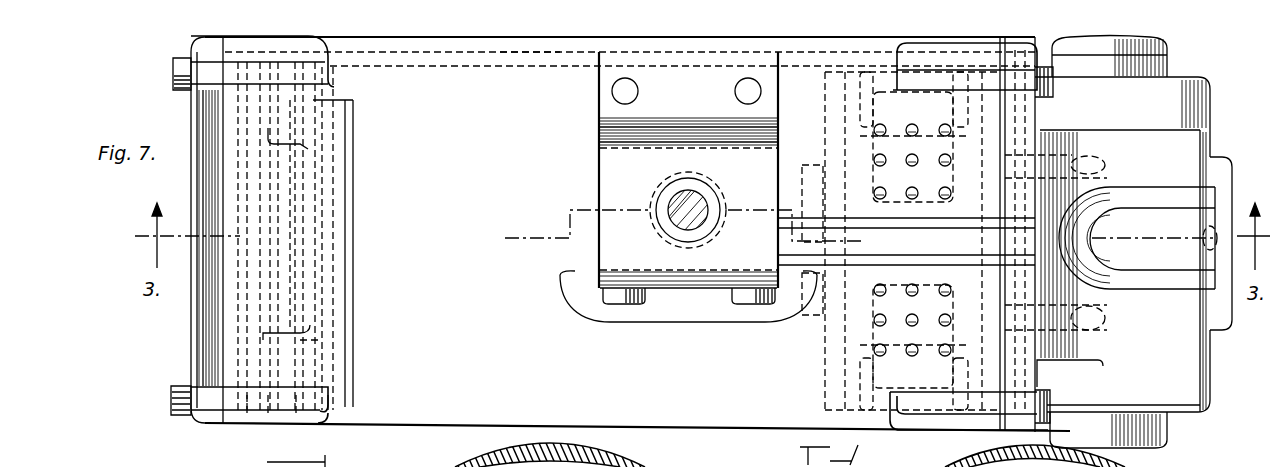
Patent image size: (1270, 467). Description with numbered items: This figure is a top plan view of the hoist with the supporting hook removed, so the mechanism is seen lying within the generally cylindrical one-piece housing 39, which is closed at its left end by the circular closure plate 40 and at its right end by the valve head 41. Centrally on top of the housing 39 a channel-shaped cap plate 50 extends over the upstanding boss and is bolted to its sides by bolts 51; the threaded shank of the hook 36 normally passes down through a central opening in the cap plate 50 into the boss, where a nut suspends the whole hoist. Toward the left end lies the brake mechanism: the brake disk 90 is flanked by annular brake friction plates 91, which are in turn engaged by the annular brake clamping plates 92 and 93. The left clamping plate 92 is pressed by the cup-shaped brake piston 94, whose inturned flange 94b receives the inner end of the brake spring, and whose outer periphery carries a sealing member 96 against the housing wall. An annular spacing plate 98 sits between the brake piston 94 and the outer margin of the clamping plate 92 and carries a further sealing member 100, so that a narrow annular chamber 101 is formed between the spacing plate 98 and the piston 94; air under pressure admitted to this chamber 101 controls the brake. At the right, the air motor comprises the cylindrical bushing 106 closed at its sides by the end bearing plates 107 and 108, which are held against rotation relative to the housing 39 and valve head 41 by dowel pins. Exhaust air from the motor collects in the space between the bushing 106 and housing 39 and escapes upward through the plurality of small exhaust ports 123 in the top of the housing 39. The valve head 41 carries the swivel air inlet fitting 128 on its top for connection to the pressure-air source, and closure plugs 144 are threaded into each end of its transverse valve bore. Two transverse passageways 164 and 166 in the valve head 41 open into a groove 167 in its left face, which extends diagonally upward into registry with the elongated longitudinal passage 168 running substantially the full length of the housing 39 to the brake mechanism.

The hook 36 is at (708, 194).
The housing 39 is at (735, 422).
The closure plate 40 is at (200, 330).
The valve head 41 is at (1213, 92).
The cap plate 50 is at (607, 166).
The bolts 51 is at (621, 302).
The brake disk 90 is at (330, 390).
The brake friction plates 91 is at (320, 277).
The brake clamping plate 92 is at (320, 317).
The brake clamping plate 93 is at (320, 371).
The brake piston 94 is at (247, 352).
The inturned flange 94b is at (312, 134).
The sealing member 96 is at (242, 416).
The spacing plate 98 is at (268, 408).
The sealing member 100 is at (292, 418).
The chamber 101 is at (312, 341).
The bushing 106 is at (858, 145).
The end bearing plate 107 is at (836, 118).
The end bearing plate 108 is at (967, 373).
The exhaust ports 123 is at (944, 294).
The swivel air inlet fitting 128 is at (1162, 213).
The closure plugs 144 is at (1167, 47).
The transverse passageway 164 is at (1098, 340).
The transverse passageway 166 is at (1068, 152).
The groove 167 is at (1017, 112).
The longitudinal passage 168 is at (515, 58).